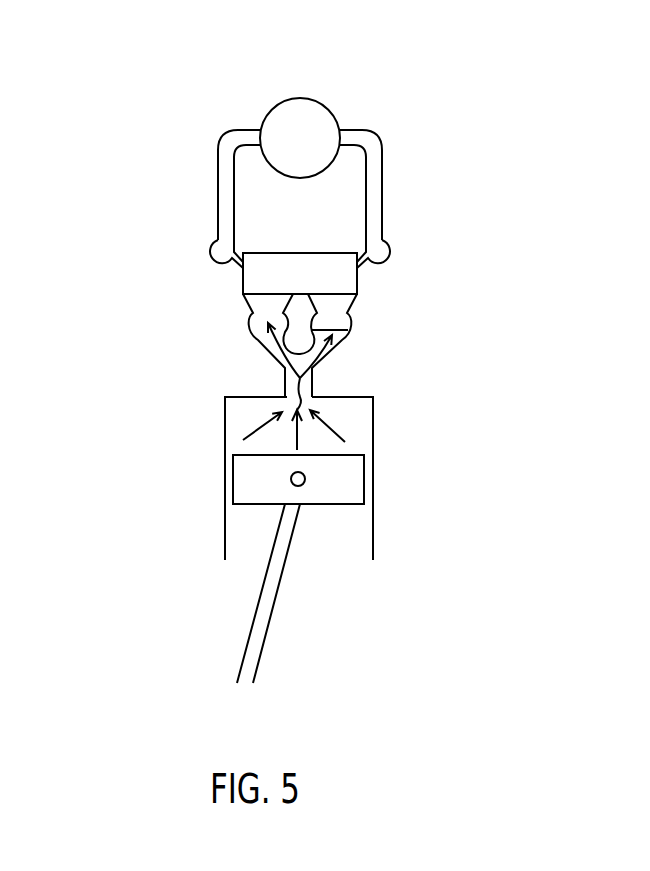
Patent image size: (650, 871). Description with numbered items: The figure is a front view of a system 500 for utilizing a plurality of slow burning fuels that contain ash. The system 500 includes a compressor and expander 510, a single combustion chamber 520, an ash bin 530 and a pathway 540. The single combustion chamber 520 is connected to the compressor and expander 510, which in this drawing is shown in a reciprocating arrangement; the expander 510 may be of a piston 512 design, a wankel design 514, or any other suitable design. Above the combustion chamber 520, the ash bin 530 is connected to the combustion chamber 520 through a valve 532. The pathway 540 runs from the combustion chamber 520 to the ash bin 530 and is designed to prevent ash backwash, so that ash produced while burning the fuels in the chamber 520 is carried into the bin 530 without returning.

The system 500 is at (129, 78).
The ash bin 530 is at (318, 132).
The pathway 540 is at (378, 192).
The valve 532 is at (235, 252).
The single combustion chamber 520 is at (257, 275).
The compressor and expander 510 is at (220, 478).
The piston 512 is at (203, 567).
The wankel design 514 is at (250, 478).